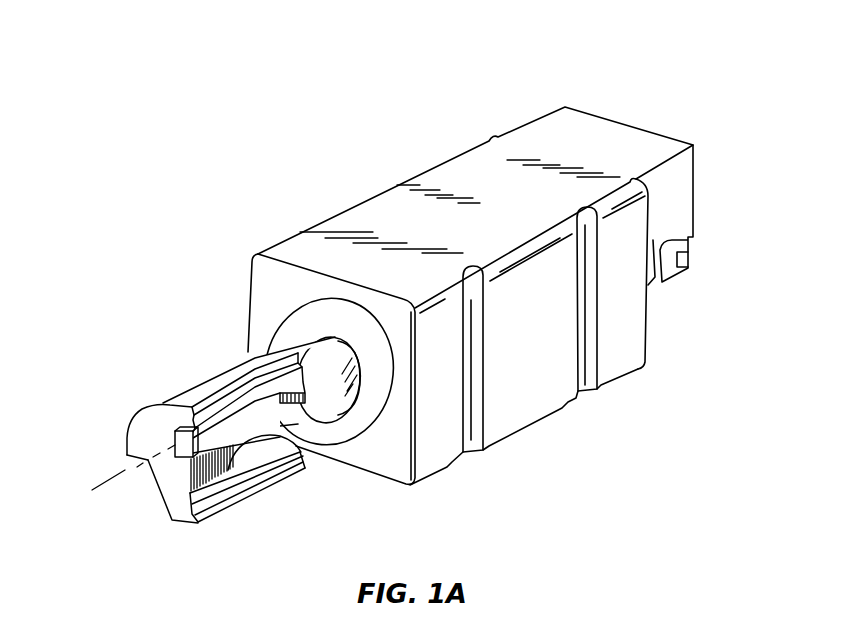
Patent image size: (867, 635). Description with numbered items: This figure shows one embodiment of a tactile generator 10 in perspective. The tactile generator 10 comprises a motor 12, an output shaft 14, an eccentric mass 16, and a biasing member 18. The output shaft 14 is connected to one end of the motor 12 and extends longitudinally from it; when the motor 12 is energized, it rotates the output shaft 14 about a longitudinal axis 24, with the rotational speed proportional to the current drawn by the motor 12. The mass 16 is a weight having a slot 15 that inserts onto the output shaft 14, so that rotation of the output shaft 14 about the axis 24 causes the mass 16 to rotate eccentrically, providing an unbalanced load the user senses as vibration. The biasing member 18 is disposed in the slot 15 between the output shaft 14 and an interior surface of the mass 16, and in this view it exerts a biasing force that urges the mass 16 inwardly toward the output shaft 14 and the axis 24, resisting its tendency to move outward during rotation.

The tactile generator 10 is at (652, 75).
The motor 12 is at (494, 178).
The output shaft 14 is at (175, 439).
The slot 15 is at (168, 497).
The eccentric mass 16 is at (138, 424).
The biasing member 18 is at (273, 450).
The longitudinal axis 24 is at (108, 484).